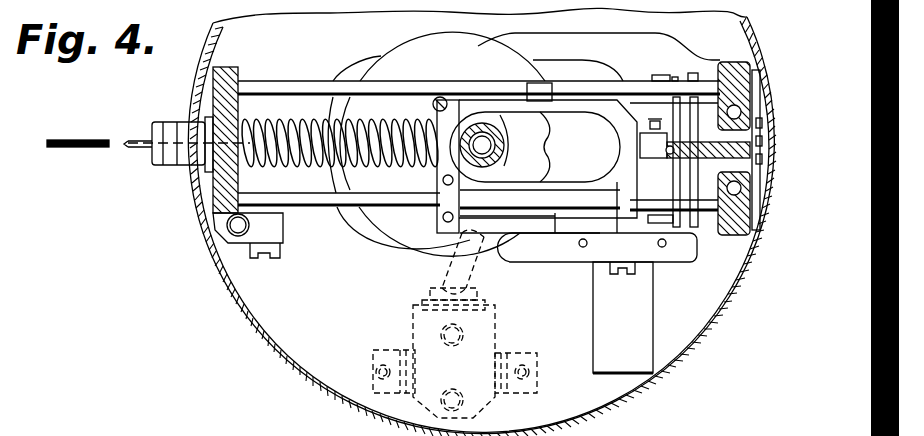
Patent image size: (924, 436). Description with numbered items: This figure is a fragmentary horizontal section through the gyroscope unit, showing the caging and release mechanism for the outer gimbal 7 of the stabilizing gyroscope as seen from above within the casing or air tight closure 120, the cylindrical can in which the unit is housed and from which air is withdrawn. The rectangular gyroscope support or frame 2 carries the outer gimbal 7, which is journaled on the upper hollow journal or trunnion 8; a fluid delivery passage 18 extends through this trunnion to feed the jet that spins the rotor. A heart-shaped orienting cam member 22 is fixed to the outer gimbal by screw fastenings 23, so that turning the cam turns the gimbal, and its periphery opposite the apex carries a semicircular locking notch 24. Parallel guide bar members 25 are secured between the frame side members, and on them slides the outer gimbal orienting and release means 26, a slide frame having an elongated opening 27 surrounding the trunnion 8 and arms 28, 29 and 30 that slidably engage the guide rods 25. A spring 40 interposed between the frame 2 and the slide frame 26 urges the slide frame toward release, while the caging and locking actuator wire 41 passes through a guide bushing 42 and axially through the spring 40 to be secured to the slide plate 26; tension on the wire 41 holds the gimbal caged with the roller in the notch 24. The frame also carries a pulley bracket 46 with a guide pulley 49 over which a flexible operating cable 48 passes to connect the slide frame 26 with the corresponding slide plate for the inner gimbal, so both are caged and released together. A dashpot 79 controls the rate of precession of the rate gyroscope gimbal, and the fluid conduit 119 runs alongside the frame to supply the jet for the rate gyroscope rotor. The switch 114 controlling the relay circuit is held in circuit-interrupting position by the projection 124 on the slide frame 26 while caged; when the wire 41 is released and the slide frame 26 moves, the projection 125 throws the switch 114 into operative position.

The gyroscope support or frame 2 is at (230, 68).
The outer gimbal 7 is at (351, 68).
The upper journal or trunnion 8 is at (477, 113).
The fluid delivery passage 18 is at (484, 151).
The heart-shaped orienting cam member 22 is at (412, 50).
The screw fastenings 23 is at (557, 123).
The semicircular locking notch 24 is at (547, 147).
The parallel guide bar members 25 is at (311, 84).
The outer gimbal orienting and release means 26 is at (430, 177).
The elongated opening 27 is at (492, 133).
The arm 28 is at (553, 66).
The arm 29 is at (420, 207).
The arm 30 is at (630, 197).
The spring 40 is at (297, 167).
The caging and locking actuator wire or cable 41 is at (133, 147).
The guide bushing 42 is at (182, 128).
The pulley bracket 46 is at (765, 107).
The flexible operating connection or cable 48 is at (772, 157).
The guide pulley 49 is at (772, 117).
The dashpot 79 is at (647, 333).
The switch 114 is at (495, 324).
The fluid conduit 119 is at (238, 246).
The casing or air tight closure 120 is at (681, 363).
The projection 124 is at (565, 262).
The projection 125 is at (445, 224).